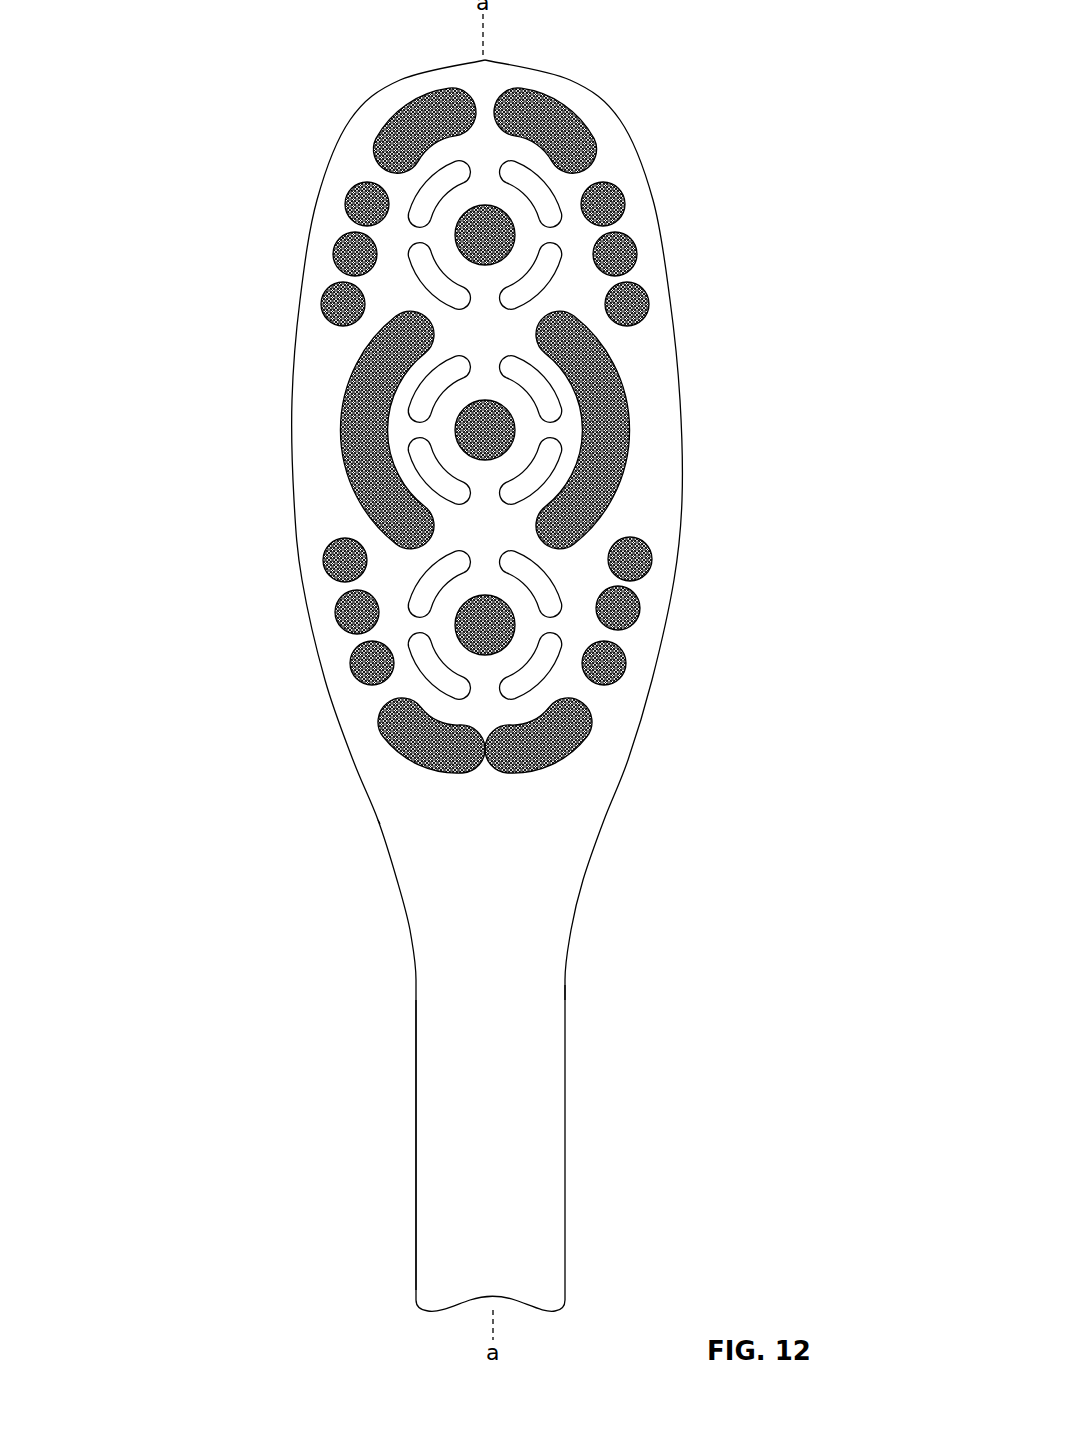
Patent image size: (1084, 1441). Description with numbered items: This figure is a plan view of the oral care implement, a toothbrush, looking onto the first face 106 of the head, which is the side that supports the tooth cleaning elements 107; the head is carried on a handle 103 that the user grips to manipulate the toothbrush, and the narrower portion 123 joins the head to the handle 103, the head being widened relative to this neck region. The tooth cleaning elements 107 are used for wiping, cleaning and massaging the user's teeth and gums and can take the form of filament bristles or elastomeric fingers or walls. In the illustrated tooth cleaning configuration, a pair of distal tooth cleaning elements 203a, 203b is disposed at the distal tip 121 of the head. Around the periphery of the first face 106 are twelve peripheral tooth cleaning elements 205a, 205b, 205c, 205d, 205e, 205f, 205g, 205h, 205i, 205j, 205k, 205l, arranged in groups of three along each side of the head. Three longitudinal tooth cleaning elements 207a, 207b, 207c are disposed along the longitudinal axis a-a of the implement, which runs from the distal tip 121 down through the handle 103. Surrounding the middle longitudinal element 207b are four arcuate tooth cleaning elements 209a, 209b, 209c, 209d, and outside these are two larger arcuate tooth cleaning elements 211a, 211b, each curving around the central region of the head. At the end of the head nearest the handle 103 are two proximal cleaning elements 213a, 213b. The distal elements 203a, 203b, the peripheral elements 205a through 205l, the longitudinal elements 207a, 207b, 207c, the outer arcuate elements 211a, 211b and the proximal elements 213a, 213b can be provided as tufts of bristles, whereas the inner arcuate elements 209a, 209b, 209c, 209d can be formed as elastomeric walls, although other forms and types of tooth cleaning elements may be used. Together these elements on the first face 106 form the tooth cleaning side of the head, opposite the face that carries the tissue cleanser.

The distal tip 121 is at (497, 60).
The distal tooth cleaning element 203a is at (577, 120).
The distal tooth cleaning element 203b is at (405, 110).
The peripheral tooth cleaning element 205a is at (623, 204).
The peripheral tooth cleaning element 205b is at (637, 256).
The peripheral tooth cleaning element 205c is at (649, 305).
The peripheral tooth cleaning element 205d is at (652, 558).
The peripheral tooth cleaning element 205e is at (640, 608).
The peripheral tooth cleaning element 205f is at (626, 668).
The peripheral tooth cleaning element 205g is at (347, 206).
The peripheral tooth cleaning element 205h is at (333, 257).
The peripheral tooth cleaning element 205i is at (321, 305).
The peripheral tooth cleaning element 205j is at (323, 561).
The peripheral tooth cleaning element 205k is at (335, 612).
The peripheral tooth cleaning element 205l is at (350, 663).
The longitudinal tooth cleaning element 207a is at (510, 224).
The longitudinal tooth cleaning element 207b is at (515, 430).
The longitudinal tooth cleaning element 207c is at (515, 625).
The arcuate tooth cleaning element 209a is at (408, 392).
The arcuate tooth cleaning element 209b is at (412, 497).
The arcuate tooth cleaning element 209c is at (558, 388).
The arcuate tooth cleaning element 209d is at (560, 463).
The arcuate tooth cleaning element 211a is at (632, 424).
The arcuate tooth cleaning element 211b is at (340, 437).
The proximal cleaning element 213a is at (572, 752).
The proximal cleaning element 213b is at (400, 752).
The tooth cleaning elements 107 is at (667, 840).
The neck 123 is at (565, 892).
The first face 106 is at (550, 1023).
The handle 103 is at (565, 1163).